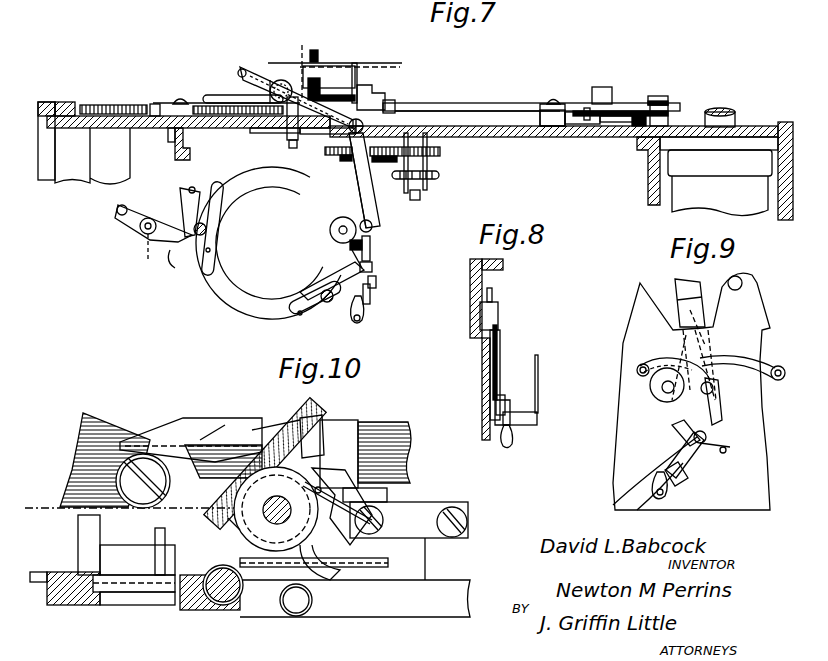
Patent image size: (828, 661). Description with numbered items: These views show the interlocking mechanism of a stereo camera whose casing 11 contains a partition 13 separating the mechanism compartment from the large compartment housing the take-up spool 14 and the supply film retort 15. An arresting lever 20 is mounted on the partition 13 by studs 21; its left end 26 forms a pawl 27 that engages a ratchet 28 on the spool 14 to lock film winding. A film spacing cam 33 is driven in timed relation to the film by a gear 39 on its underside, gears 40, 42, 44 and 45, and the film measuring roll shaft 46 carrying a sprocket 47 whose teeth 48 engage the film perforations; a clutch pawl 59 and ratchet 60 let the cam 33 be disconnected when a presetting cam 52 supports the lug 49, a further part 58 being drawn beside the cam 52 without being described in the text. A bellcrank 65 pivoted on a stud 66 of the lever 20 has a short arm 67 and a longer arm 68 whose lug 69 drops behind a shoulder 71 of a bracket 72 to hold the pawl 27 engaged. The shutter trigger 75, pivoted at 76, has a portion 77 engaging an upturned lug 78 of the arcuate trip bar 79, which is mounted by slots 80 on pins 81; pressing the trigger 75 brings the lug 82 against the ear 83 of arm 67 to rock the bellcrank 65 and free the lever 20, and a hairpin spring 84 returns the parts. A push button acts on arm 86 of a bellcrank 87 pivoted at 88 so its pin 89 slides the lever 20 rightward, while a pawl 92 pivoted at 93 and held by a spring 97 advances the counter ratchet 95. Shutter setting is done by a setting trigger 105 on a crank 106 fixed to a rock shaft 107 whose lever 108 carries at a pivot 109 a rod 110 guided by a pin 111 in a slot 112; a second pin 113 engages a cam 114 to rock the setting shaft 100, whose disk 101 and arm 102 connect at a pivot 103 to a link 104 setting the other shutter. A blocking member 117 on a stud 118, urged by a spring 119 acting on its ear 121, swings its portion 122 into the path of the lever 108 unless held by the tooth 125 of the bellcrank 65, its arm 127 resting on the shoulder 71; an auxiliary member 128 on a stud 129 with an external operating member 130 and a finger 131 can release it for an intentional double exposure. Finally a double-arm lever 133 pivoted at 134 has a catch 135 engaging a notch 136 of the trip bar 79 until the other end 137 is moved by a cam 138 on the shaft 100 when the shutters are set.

In FIG. 7, the body portion or casing 11 is at (786, 216).
In FIG. 10, the body portion or casing 11 is at (420, 605).
In FIG. 7, the partition 13 is at (494, 126).
In FIG. 7, the take-up spool 14 is at (94, 178).
In FIG. 7, the supply film retort 15 is at (680, 190).
In FIG. 7, the lever 20 is at (462, 103).
In FIG. 10, the lever 20 is at (78, 450).
In FIG. 7, the studs 21 is at (178, 98).
In FIG. 7, the left end 26 is at (152, 104).
In FIG. 7, the pawl 27 is at (143, 128).
In FIG. 7, the ratchet 28 is at (80, 105).
In FIG. 7, the control disk or film spacing cam 33 is at (190, 130).
In FIG. 7, the gear 39 is at (180, 130).
In FIG. 7, the gear 40 is at (290, 125).
In FIG. 7, the gear 42 is at (390, 100).
In FIG. 7, the gear 44 is at (330, 151).
In FIG. 7, the gear 45 is at (442, 153).
In FIG. 7, the film measuring roll shaft 46 is at (420, 200).
In FIG. 7, the sprocket 47 is at (428, 180).
In FIG. 7, the teeth 48 is at (441, 175).
In FIG. 7, the lug 49 is at (233, 73).
In FIG. 7, the presetting or initially-adjusting cam 52 is at (195, 106).
In FIG. 7, the housing 58 is at (212, 95).
In FIG. 7, the pawl 59 is at (388, 163).
In FIG. 7, the ratchet 60 is at (345, 162).
In FIG. 7, the bellcrank 65 is at (305, 64).
In FIG. 10, the bellcrank 65 is at (170, 418).
In FIG. 10, the stud 66 is at (133, 458).
In FIG. 10, the short arm 67 is at (78, 530).
In FIG. 10, the longer arm 68 is at (302, 418).
In FIG. 10, the lug 69 is at (345, 550).
In FIG. 7, the shoulder 71 is at (376, 94).
In FIG. 10, the shoulder 71 is at (388, 494).
In FIG. 7, the bracket 72 is at (400, 108).
In FIG. 10, the bracket 72 is at (468, 507).
In FIG. 7, the shutter trigger 75 is at (130, 222).
In FIG. 7, the pivot 76 is at (150, 247).
In FIG. 7, the portion 77 is at (172, 256).
In FIG. 7, the upturned ear or lug 78 is at (182, 195).
In FIG. 7, the shutter trip bar 79 is at (249, 302).
In FIG. 8, the shutter trip bar 79 is at (538, 381).
In FIG. 9, the shutter trip bar 79 is at (625, 486).
In FIG. 10, the shutter trip bar 79 is at (40, 582).
In FIG. 7, the arcuate slots 80 is at (211, 251).
In FIG. 7, the pins 81 is at (207, 229).
In FIG. 7, the lug 82 is at (262, 131).
In FIG. 10, the lug 82 is at (100, 550).
In FIG. 7, the lug or ear 83 is at (280, 172).
In FIG. 10, the lug or ear 83 is at (160, 575).
In FIG. 7, the hairpin spring 84 is at (196, 191).
In FIG. 7, the arm 86 is at (603, 87).
In FIG. 7, the bellcrank 87 is at (655, 105).
In FIG. 7, the pivot 88 is at (668, 99).
In FIG. 7, the pin 89 is at (640, 126).
In FIG. 7, the pawl 92 is at (580, 118).
In FIG. 7, the pivot 93 is at (620, 111).
In FIG. 7, the counter ratchet 95 is at (586, 108).
In FIG. 7, the spring 97 is at (625, 122).
In FIG. 7, the shutter setting shaft 100 is at (343, 217).
In FIG. 9, the shutter setting shaft 100 is at (667, 394).
In FIG. 7, the disk 101 is at (330, 230).
In FIG. 8, the disk 101 is at (470, 315).
In FIG. 9, the disk 101 is at (652, 391).
In FIG. 7, the radially extending arm 102 is at (372, 227).
In FIG. 9, the radially extending arm 102 is at (652, 365).
In FIG. 9, the pivot 103 is at (638, 373).
In FIG. 8, the connecting link 104 is at (492, 293).
In FIG. 9, the connecting link 104 is at (735, 363).
In FIG. 7, the shutter setting trigger 105 is at (243, 69).
In FIG. 7, the crank or arm 106 is at (277, 83).
In FIG. 7, the rock shaft 107 is at (271, 80).
In FIG. 10, the rock shaft 107 is at (120, 605).
In FIG. 7, the crank or lever 108 is at (327, 139).
In FIG. 10, the crank or lever 108 is at (388, 563).
In FIG. 7, the pivot 109 is at (360, 178).
In FIG. 7, the connecting rod 110 is at (370, 207).
In FIG. 9, the connecting rod 110 is at (678, 292).
In FIG. 7, the pin 111 is at (372, 267).
In FIG. 9, the pin 111 is at (714, 389).
In FIG. 9, the slot 112 is at (708, 437).
In FIG. 7, the second pin 113 is at (335, 283).
In FIG. 9, the second pin 113 is at (700, 408).
In FIG. 7, the cam 114 is at (352, 254).
In FIG. 9, the cam 114 is at (705, 346).
In FIG. 7, the setting lever lock or blocking member 117 is at (358, 75).
In FIG. 10, the setting lever lock or blocking member 117 is at (228, 520).
In FIG. 7, the stud 118 is at (329, 83).
In FIG. 10, the spring 119 is at (330, 496).
In FIG. 7, the upturned lug or ear 121 is at (330, 63).
In FIG. 10, the upturned lug or ear 121 is at (225, 425).
In FIG. 10, the radially projecting portion 122 is at (300, 552).
In FIG. 10, the tooth 125 is at (258, 422).
In FIG. 10, the arm 127 is at (276, 440).
In FIG. 7, the auxiliary member 128 is at (345, 66).
In FIG. 10, the auxiliary member 128 is at (322, 582).
In FIG. 10, the stud 129 is at (274, 525).
In FIG. 7, the operating member 130 is at (318, 52).
In FIG. 10, the operating member 130 is at (298, 612).
In FIG. 7, the radial finger 131 is at (358, 70).
In FIG. 10, the radial finger 131 is at (320, 487).
In FIG. 7, the double-arm lever 133 is at (370, 292).
In FIG. 8, the double-arm lever 133 is at (500, 356).
In FIG. 9, the double-arm lever 133 is at (678, 438).
In FIG. 7, the pivot 134 is at (376, 281).
In FIG. 8, the pivot 134 is at (503, 395).
In FIG. 9, the pivot 134 is at (705, 450).
In FIG. 7, the catch 135 is at (364, 312).
In FIG. 8, the catch 135 is at (509, 444).
In FIG. 9, the catch 135 is at (667, 494).
In FIG. 8, the notch 136 is at (510, 416).
In FIG. 9, the notch 136 is at (688, 481).
In FIG. 7, the other end 137 is at (371, 246).
In FIG. 8, the other end 137 is at (497, 333).
In FIG. 9, the other end 137 is at (722, 402).
In FIG. 7, the cam 138 is at (350, 245).
In FIG. 8, the cam 138 is at (498, 307).